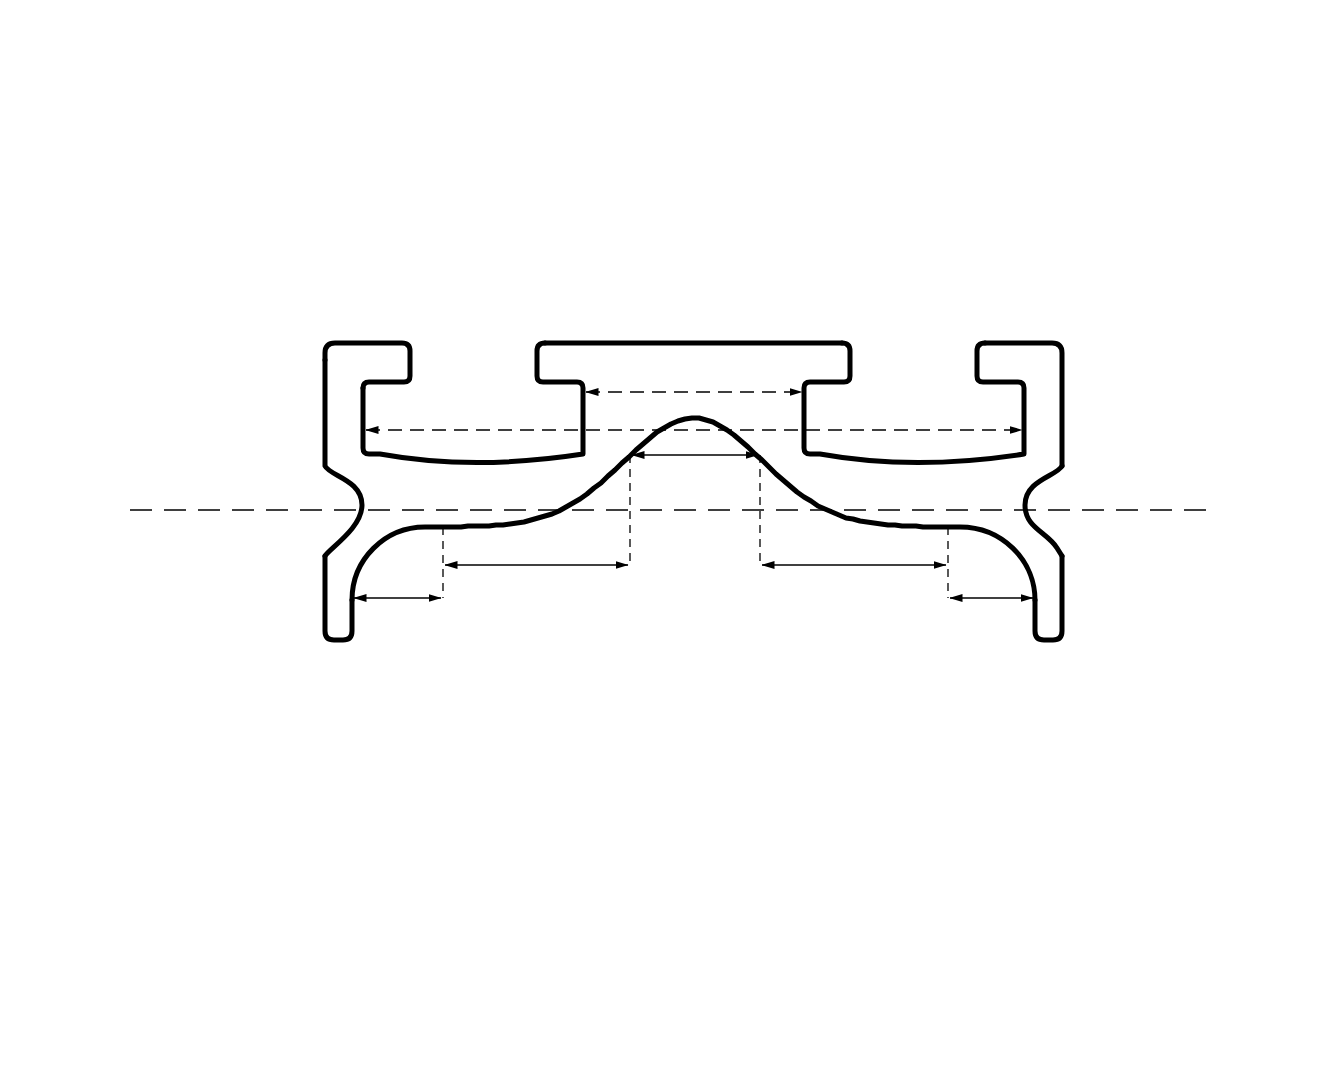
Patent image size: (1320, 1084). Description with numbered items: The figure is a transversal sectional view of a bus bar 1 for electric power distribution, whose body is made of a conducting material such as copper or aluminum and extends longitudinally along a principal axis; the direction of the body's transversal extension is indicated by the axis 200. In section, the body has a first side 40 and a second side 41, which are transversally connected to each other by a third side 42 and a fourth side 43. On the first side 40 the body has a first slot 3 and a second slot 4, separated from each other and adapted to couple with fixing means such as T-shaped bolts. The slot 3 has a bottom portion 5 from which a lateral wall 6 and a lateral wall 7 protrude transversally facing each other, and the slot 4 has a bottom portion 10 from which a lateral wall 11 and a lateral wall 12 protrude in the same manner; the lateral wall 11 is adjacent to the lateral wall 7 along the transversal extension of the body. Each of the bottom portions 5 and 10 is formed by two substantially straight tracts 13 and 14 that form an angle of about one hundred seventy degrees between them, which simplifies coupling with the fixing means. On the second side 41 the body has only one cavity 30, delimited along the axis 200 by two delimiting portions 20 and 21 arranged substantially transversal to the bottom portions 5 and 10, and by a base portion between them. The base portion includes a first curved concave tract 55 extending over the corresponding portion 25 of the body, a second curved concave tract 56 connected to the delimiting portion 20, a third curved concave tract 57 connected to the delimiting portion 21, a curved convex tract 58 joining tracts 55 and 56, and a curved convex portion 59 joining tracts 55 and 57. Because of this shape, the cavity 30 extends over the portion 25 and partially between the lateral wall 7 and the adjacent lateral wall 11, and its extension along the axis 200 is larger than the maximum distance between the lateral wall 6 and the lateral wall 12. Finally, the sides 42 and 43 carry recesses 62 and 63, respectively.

The bus bar 1 is at (1137, 246).
The first slot 3 is at (482, 391).
The second slot 4 is at (932, 364).
The bottom portion 5 is at (477, 453).
The lateral wall 6 is at (367, 405).
The lateral wall 7 is at (551, 451).
The bottom portion 10 is at (917, 459).
The lateral wall 11 is at (813, 415).
The lateral wall 12 is at (1020, 406).
The straight tract 13 is at (864, 453).
The straight tract 14 is at (579, 422).
The delimiting portion 20 is at (341, 611).
The delimiting portion 21 is at (1049, 615).
The portion of the body 25 is at (700, 405).
The cavity 30 is at (647, 578).
The first side 40 is at (776, 342).
The second side 41 is at (338, 645).
The third side 42 is at (319, 387).
The fourth side 43 is at (1072, 588).
The curved tract 55 is at (697, 459).
The second curved concave tract 56 is at (393, 604).
The third curved concave tract 57 is at (998, 604).
The curved convex tract 58 is at (513, 569).
The curved convex portion 59 is at (875, 571).
The recess 62 is at (325, 527).
The recess 63 is at (1051, 496).
The transversal axis 200 is at (1184, 506).